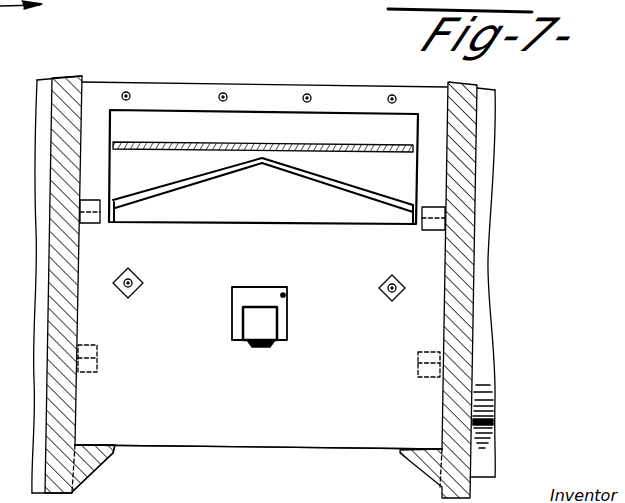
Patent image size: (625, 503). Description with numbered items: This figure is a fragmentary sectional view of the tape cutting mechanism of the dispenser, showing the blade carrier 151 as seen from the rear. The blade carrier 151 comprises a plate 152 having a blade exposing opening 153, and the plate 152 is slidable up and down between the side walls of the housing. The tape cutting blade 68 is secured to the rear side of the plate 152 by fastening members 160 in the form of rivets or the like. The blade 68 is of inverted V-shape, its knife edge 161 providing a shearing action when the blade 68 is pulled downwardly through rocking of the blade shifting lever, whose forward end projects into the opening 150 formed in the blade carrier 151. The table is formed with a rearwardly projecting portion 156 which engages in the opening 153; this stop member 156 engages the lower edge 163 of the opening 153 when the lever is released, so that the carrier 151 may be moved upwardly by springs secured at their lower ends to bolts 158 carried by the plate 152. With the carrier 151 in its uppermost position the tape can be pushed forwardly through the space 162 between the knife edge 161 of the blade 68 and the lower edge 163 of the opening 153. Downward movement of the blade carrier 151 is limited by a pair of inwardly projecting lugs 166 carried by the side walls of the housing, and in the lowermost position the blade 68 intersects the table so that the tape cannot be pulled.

The tape cutting blade 68 is at (362, 123).
The opening 150 is at (286, 296).
The blade carrier 151 is at (278, 428).
The plate 152 is at (172, 437).
The blade exposing opening 153 is at (326, 119).
The rearwardly projecting portion 156 is at (187, 145).
The bolts 158 is at (167, 265).
The fastening members 160 is at (228, 92).
The knife edge 161 is at (211, 180).
The space 162 is at (76, 1).
The lower edge of opening 163 is at (248, 224).
The inwardly projecting lugs 166 is at (103, 472).